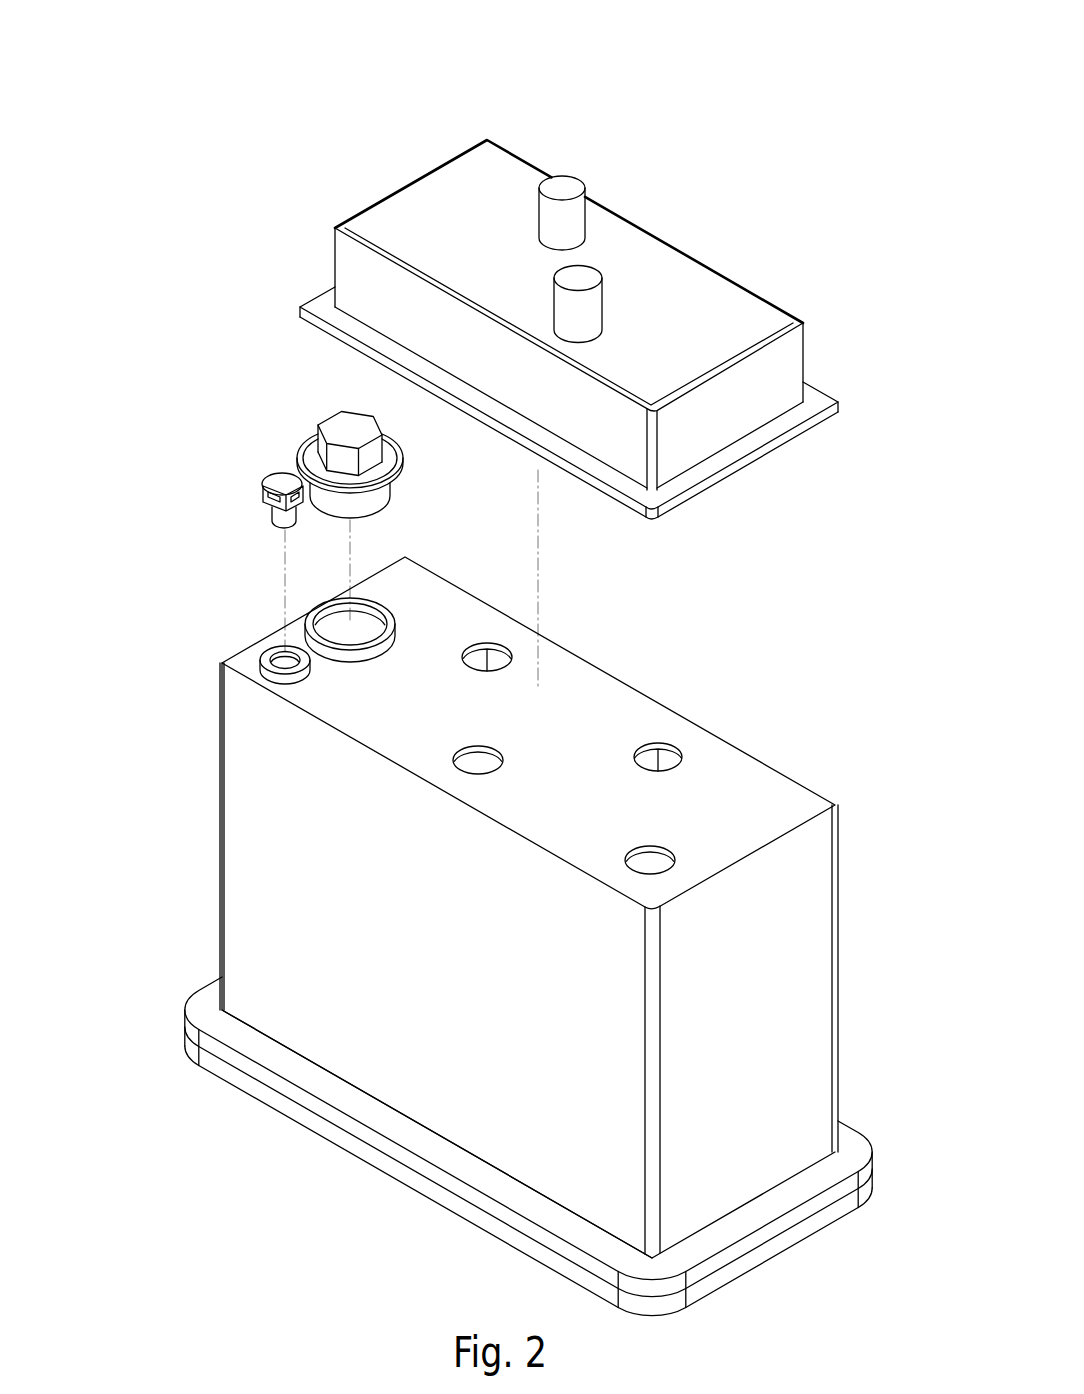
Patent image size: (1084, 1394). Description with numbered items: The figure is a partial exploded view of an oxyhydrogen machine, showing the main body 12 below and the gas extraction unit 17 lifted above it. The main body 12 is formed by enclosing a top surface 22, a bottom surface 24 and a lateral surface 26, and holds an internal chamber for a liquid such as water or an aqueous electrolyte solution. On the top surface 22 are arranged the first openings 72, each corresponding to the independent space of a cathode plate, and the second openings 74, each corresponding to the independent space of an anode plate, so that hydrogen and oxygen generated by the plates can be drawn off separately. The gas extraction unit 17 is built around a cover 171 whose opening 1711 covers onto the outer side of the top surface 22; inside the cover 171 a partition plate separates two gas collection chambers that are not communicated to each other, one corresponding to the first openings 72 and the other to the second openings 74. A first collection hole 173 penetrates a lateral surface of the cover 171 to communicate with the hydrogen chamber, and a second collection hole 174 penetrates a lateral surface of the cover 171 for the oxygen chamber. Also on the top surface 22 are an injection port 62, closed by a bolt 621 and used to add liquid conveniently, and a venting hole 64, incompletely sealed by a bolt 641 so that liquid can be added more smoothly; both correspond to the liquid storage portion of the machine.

The main body 12 is at (498, 803).
The gas extraction unit 17 is at (587, 281).
The cover 171 is at (513, 152).
The opening 1711 is at (582, 490).
The first collection hole 173 is at (583, 280).
The second collection hole 174 is at (565, 186).
The top surface 22 is at (525, 853).
The bottom surface 24 is at (352, 1145).
The lateral surface 26 is at (210, 833).
The injection port 62 is at (365, 633).
The bolt 621 is at (345, 427).
The venting hole 64 is at (275, 657).
The bolt 641 is at (278, 484).
The first opening 72 is at (485, 765).
The second opening 74 is at (494, 660).